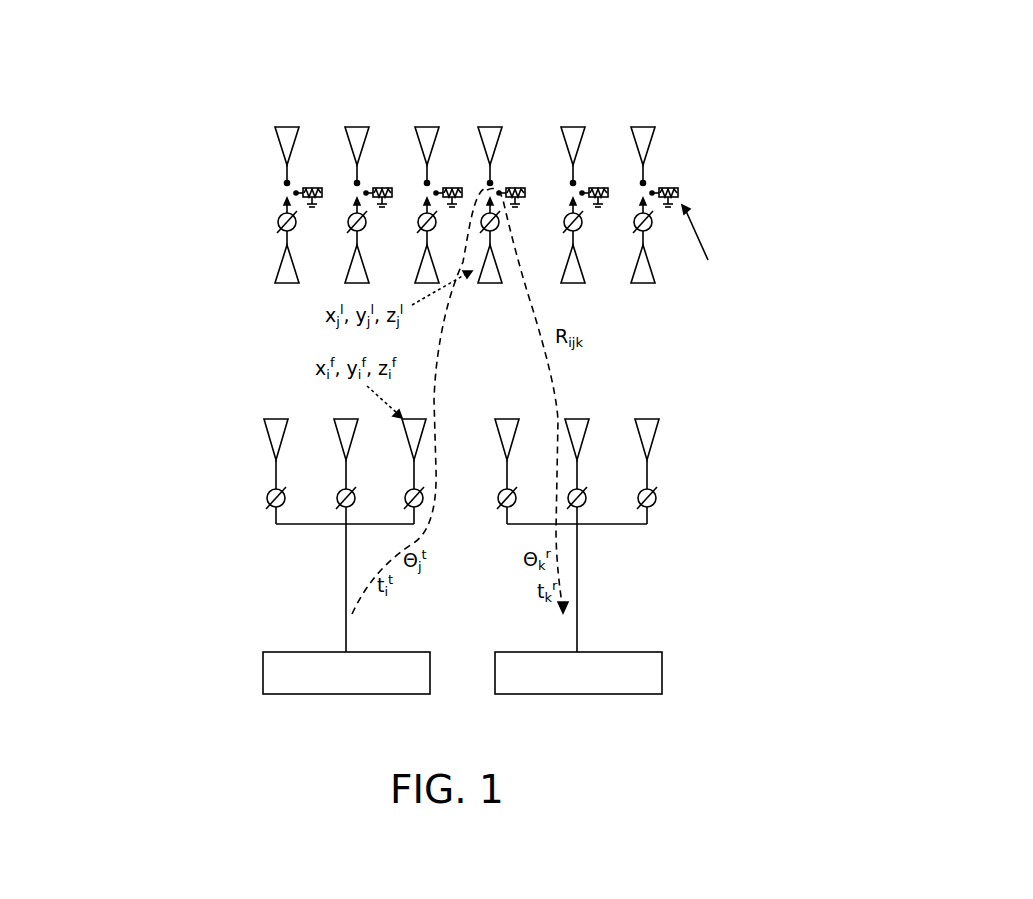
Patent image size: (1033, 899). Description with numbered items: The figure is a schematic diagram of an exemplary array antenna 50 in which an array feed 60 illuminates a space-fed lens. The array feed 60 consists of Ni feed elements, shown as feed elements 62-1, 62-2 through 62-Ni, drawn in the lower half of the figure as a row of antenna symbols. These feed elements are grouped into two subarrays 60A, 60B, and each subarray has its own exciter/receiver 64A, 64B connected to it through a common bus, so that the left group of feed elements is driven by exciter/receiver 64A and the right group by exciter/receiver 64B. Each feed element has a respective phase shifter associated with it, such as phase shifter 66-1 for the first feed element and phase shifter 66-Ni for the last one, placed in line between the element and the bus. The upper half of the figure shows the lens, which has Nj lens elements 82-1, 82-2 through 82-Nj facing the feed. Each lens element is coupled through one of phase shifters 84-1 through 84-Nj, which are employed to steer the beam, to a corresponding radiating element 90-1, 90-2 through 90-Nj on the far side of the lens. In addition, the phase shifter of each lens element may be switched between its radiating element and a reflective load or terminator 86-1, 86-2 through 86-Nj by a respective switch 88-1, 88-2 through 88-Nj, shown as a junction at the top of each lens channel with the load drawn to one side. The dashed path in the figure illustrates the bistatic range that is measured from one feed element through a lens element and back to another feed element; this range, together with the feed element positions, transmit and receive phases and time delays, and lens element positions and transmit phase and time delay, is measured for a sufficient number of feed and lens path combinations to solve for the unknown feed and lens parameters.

The array antenna 50 is at (141, 304).
The array feed 60 is at (187, 422).
The subarray 60A is at (234, 576).
The subarray 60B is at (634, 540).
The feed element 62-1 is at (265, 437).
The feed element 62-2 is at (338, 432).
The feed element 62-Ni is at (657, 433).
The exciter/receiver 64A is at (335, 694).
The exciter/receiver 64B is at (590, 694).
The phase shifter 66-1 is at (268, 505).
The phase shifter 66-Ni is at (657, 498).
The lens element 82-1 is at (277, 270).
The lens element 82-2 is at (343, 270).
The lens element 82-Nj is at (633, 270).
The phase shifter 84-1 is at (278, 218).
The phase shifter 84-Nj is at (637, 210).
The reflective load 86-1 is at (313, 186).
The reflective load 86-2 is at (383, 188).
The reflective load 86-Nj is at (668, 186).
The switch 88-1 is at (283, 185).
The switch 88-2 is at (353, 192).
The switch 88-Nj is at (640, 185).
The radiating element 90-1 is at (273, 138).
The radiating element 90-2 is at (371, 140).
The radiating element 90-Nj is at (656, 135).